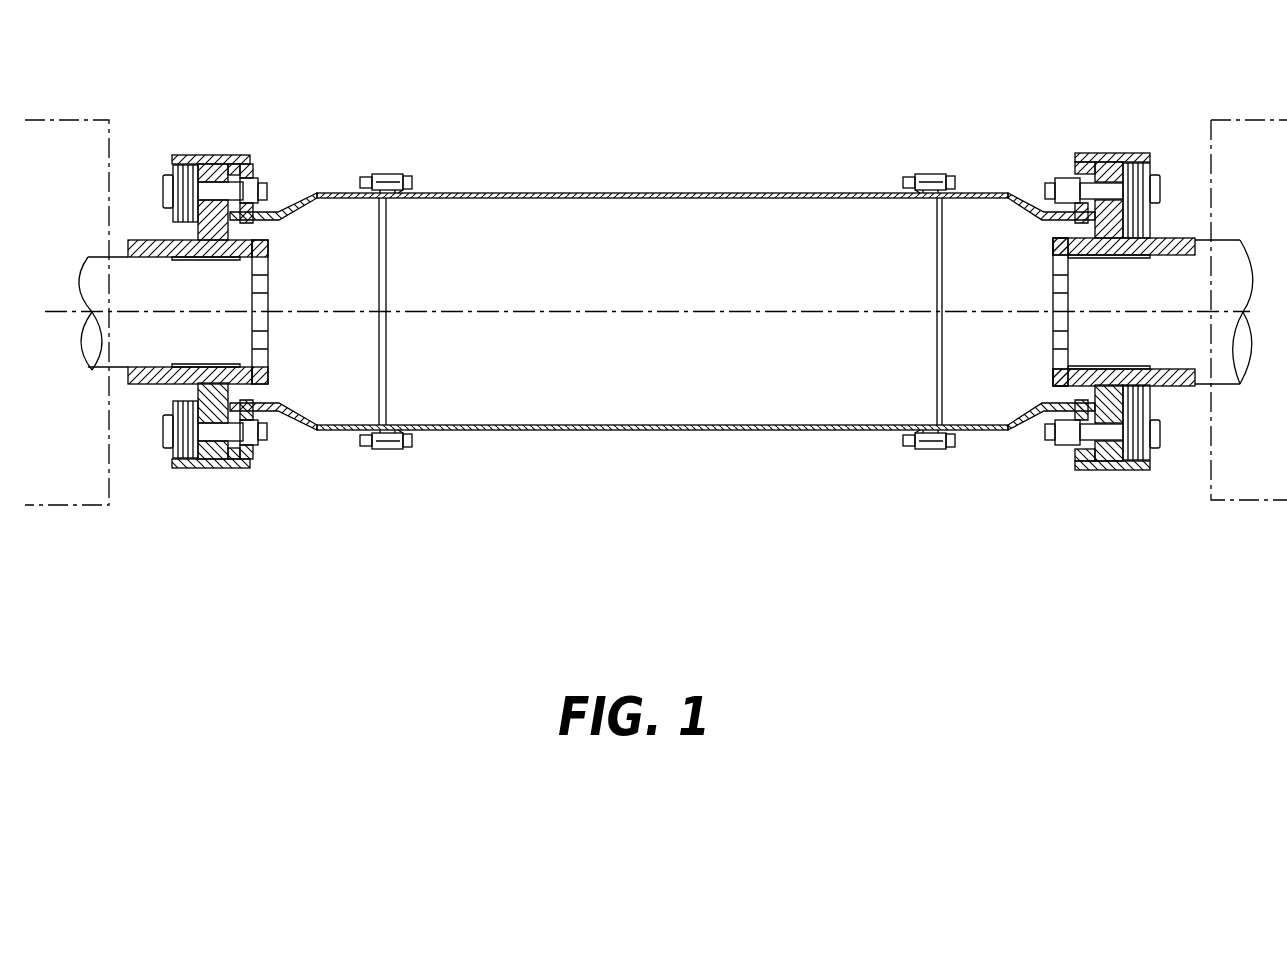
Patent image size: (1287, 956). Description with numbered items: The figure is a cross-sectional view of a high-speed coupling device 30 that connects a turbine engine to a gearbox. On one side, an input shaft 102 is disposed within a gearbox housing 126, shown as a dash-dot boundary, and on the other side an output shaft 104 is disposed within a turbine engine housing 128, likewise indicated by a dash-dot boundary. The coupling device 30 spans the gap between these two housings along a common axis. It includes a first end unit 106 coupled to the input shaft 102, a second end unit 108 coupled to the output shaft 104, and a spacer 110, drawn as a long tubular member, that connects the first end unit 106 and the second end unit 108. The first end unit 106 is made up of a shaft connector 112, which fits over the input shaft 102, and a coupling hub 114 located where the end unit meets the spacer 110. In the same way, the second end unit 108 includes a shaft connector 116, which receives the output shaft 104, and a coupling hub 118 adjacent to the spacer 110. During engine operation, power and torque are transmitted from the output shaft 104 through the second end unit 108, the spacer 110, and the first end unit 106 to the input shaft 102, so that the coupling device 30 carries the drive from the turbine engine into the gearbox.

The high-speed coupling device 30 is at (766, 112).
The input shaft 102 is at (1232, 386).
The output shaft 104 is at (86, 257).
The first end unit 106 is at (1038, 98).
The second end unit 108 is at (270, 160).
The spacer 110 is at (493, 192).
The shaft connector 112 is at (1172, 240).
The coupling hub 114 is at (960, 190).
The shaft connector 116 is at (268, 263).
The coupling hub 118 is at (343, 190).
The gearbox housing 126 is at (1236, 502).
The turbine engine housing 128 is at (81, 506).